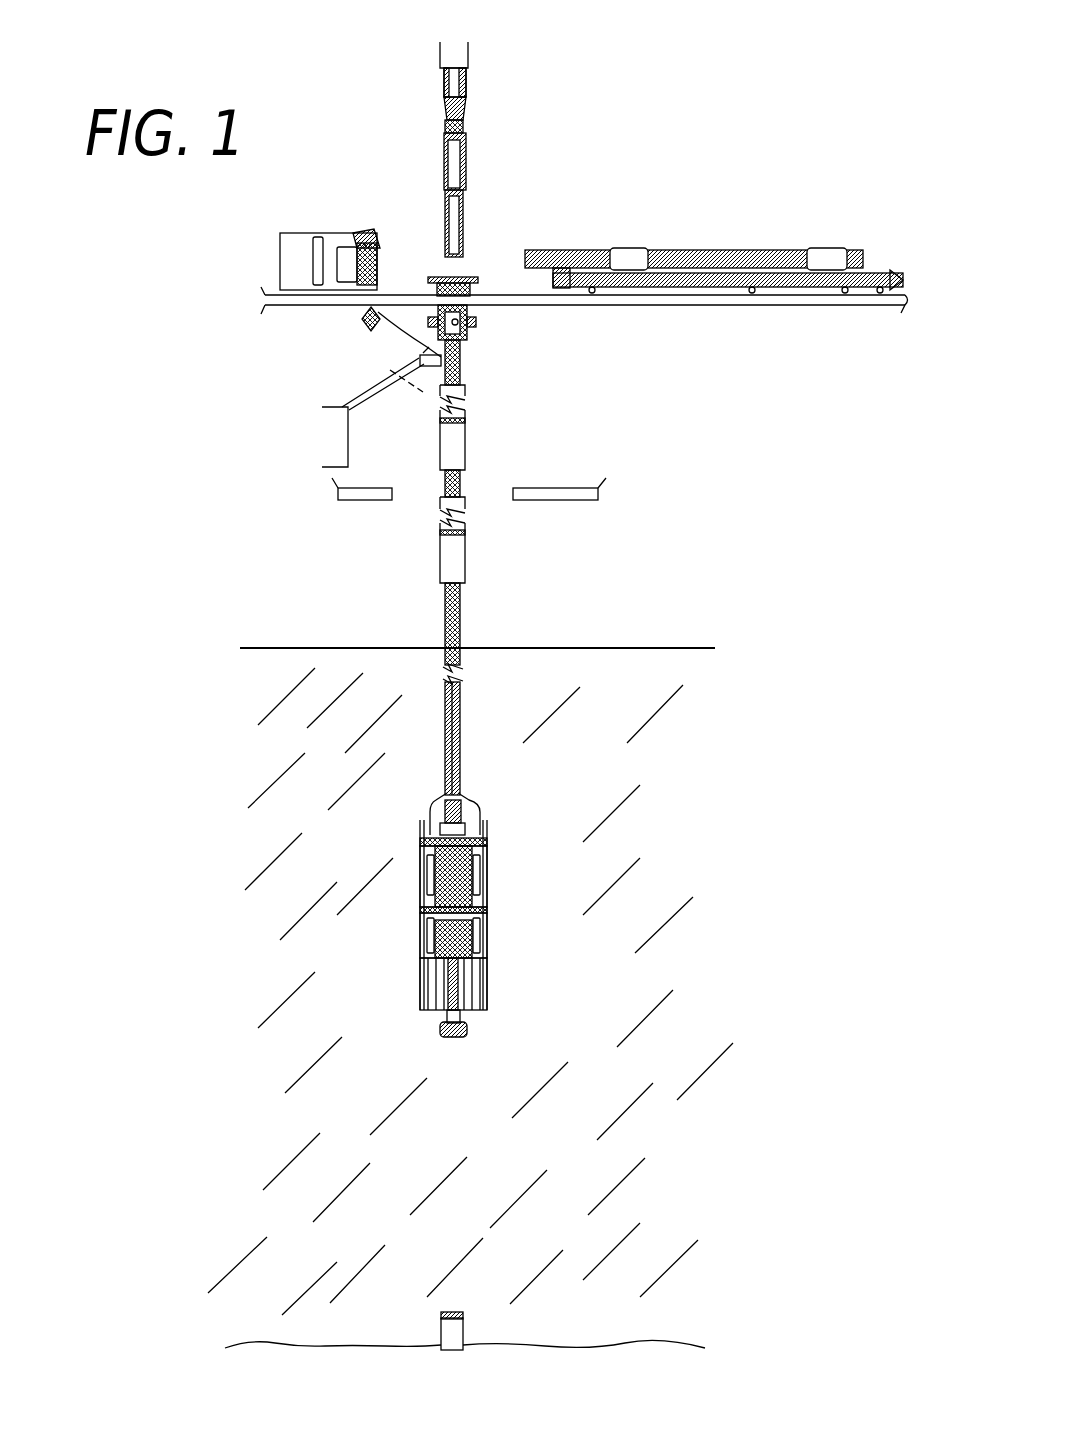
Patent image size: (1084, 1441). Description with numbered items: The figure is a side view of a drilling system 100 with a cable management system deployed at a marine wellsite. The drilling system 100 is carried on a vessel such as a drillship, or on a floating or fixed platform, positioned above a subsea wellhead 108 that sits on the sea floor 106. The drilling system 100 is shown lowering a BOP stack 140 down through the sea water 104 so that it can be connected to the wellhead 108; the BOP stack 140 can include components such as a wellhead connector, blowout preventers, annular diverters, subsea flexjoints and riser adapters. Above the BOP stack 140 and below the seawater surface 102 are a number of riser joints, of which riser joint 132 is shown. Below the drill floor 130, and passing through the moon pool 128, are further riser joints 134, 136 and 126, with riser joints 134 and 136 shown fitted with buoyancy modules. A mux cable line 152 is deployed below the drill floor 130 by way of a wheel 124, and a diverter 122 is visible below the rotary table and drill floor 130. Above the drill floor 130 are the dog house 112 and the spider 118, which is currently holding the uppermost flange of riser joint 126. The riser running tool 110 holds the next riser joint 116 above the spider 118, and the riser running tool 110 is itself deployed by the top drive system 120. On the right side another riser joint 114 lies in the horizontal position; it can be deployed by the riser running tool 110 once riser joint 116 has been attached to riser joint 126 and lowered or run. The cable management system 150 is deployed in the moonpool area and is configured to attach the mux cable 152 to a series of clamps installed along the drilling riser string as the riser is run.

The drilling system 100 is at (673, 57).
The seawater surface 102 is at (632, 646).
The sea water 104 is at (470, 991).
The sea floor 106 is at (586, 1343).
The subsea wellhead 108 is at (464, 1335).
The riser running tool 110 is at (434, 115).
The dog house 112 is at (290, 249).
The riser joint 114 is at (710, 234).
The riser joint 116 is at (463, 185).
The spider 118 is at (470, 290).
The top drive system 120 is at (438, 53).
The diverter 122 is at (463, 333).
The wheel 124 is at (359, 309).
The riser joint 126 is at (461, 348).
The moon pool 128 is at (500, 478).
The drill floor 130 is at (653, 307).
The riser joint 132 is at (459, 692).
The riser joint 134 is at (440, 540).
The riser joint 136 is at (467, 437).
The BOP stack 140 is at (393, 930).
The cable management system 150 is at (359, 384).
The mux cable line 152 is at (404, 333).